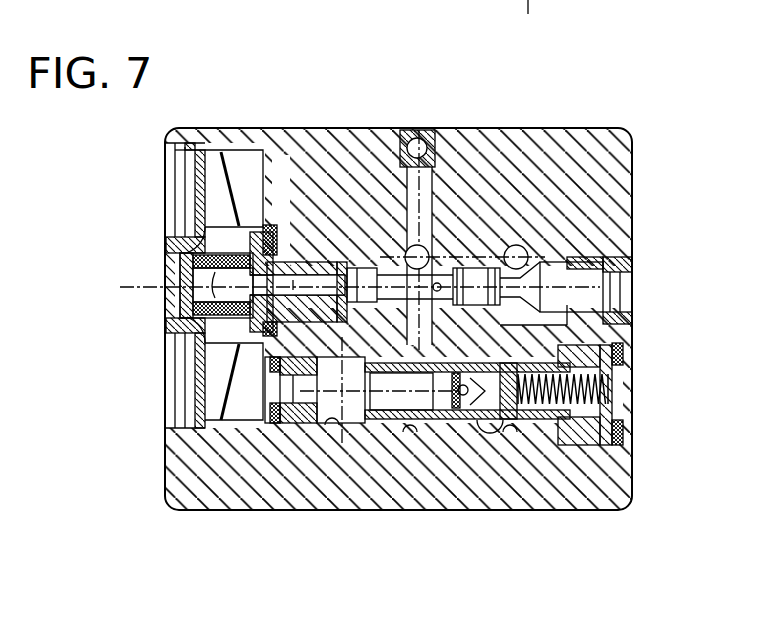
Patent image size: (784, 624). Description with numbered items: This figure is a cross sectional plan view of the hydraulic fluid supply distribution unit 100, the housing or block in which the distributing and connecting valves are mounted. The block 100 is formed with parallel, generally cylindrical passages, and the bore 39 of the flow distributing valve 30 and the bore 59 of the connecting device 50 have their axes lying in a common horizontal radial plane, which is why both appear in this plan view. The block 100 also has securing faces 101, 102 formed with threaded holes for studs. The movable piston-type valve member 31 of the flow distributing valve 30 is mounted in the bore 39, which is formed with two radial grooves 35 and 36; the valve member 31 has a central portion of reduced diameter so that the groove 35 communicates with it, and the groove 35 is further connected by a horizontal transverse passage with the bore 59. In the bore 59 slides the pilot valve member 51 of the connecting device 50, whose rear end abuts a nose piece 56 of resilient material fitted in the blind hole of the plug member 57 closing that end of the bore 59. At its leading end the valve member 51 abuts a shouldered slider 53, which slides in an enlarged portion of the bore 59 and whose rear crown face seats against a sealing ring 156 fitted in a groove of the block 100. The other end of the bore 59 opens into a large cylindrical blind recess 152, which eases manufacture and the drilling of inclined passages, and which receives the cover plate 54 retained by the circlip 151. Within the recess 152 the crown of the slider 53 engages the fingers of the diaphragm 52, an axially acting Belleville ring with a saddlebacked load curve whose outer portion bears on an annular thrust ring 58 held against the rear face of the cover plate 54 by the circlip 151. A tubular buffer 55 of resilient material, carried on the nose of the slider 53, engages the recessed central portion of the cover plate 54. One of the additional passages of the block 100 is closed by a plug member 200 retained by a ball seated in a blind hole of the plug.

The hydraulic fluid supply distribution unit 100 is at (384, 126).
The securing face 101 is at (163, 210).
The securing face 102 is at (176, 130).
The cover plate 54 is at (168, 262).
The tubular buffer 55 is at (194, 346).
The circlip 151 is at (183, 410).
The blind recess 152 is at (240, 162).
The annular thrust ring 58 is at (213, 428).
The sealing ring 156 is at (283, 255).
The shouldered slider 53 is at (307, 257).
The connecting device 50 is at (264, 233).
The bore 59 is at (368, 250).
The plug member 200 is at (433, 128).
The pilot valve member 51 is at (441, 286).
The nose piece 56 is at (585, 295).
The plug member 57 is at (606, 268).
The diaphragm 52 is at (240, 400).
The bore 39 is at (332, 428).
The flow distributing valve 30 is at (378, 435).
The radial groove 35 is at (414, 433).
The valve member 31 is at (468, 398).
The radial groove 36 is at (515, 433).